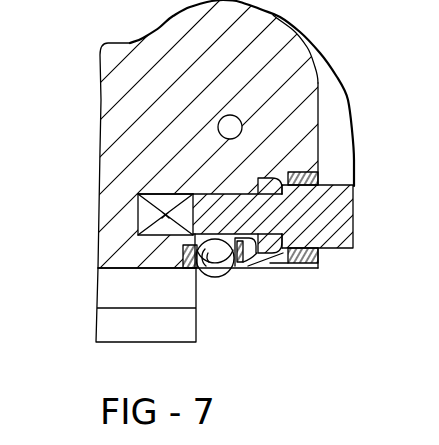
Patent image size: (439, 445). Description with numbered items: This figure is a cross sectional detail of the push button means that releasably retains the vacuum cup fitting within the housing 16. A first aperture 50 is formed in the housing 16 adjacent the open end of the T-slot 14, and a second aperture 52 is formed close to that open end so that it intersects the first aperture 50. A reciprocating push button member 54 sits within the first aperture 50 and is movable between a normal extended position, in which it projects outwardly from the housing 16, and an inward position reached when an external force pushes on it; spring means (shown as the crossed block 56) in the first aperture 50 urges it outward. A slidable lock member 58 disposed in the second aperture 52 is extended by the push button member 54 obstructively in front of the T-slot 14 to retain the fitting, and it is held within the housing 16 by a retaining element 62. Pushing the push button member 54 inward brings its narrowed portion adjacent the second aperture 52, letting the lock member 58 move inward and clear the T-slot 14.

The housing 16 is at (203, 84).
The T-slot 14 is at (115, 290).
The first aperture 50 is at (160, 194).
The second aperture 52 is at (242, 262).
The push button member 54 is at (353, 203).
The spring 56 is at (140, 211).
The slidable lock member 58 is at (215, 281).
The retaining element 62 is at (257, 263).